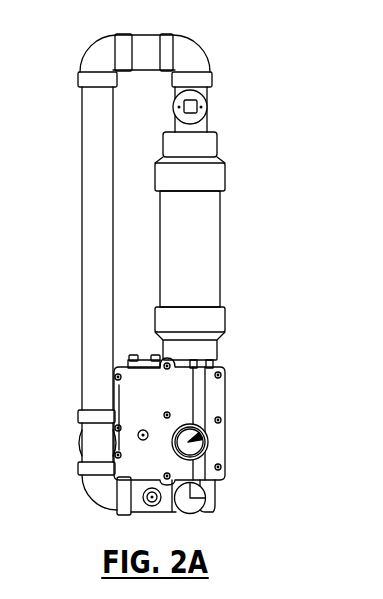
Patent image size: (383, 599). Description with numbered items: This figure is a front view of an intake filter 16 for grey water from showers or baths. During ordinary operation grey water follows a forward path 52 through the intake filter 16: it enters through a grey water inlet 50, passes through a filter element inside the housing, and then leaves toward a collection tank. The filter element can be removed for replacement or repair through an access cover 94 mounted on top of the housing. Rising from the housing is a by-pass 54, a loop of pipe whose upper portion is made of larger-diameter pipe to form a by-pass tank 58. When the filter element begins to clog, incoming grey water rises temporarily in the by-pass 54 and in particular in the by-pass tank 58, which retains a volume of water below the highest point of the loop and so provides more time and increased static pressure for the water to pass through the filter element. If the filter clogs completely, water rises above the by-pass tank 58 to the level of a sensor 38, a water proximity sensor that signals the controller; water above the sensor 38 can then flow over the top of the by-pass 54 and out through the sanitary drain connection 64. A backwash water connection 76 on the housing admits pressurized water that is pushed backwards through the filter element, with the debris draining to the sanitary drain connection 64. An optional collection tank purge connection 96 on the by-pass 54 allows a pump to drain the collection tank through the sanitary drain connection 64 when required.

The intake filter 16 is at (272, 190).
The sensor 38 is at (210, 105).
The grey water inlet 50 is at (210, 442).
The forward path 52 is at (201, 436).
The by-pass 54 is at (145, 35).
The by-pass tank 58 is at (220, 275).
The sanitary drain connection 64 is at (205, 512).
The backwash water connection 76 is at (138, 433).
The access cover 94 is at (143, 358).
The collection tank purge connection 96 is at (143, 495).